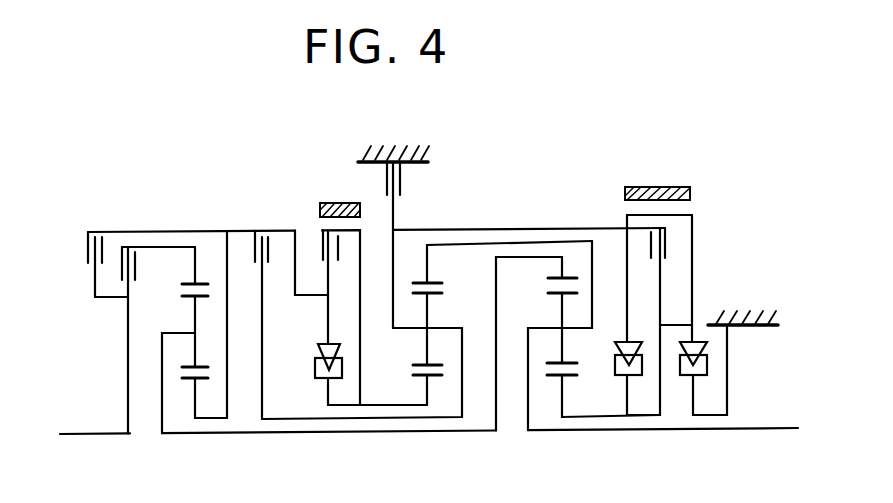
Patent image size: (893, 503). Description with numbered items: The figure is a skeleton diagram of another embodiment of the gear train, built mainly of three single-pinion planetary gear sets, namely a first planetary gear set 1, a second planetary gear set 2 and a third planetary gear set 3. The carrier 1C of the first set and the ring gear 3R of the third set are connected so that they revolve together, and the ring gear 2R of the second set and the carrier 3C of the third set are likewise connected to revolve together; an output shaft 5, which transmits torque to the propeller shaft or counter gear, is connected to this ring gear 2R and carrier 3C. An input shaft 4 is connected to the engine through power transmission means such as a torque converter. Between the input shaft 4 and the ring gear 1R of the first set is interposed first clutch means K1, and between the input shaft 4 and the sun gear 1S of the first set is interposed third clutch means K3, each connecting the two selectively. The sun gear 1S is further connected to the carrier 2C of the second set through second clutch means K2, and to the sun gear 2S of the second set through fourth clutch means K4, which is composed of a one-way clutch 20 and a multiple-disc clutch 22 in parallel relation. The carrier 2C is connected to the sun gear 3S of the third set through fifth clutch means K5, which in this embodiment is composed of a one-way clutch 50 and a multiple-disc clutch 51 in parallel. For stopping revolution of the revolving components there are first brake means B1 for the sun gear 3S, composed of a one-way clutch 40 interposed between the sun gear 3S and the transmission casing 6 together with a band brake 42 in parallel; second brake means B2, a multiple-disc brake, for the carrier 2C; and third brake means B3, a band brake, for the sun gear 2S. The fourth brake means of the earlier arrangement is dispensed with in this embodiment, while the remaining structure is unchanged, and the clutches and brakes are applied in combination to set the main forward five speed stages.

The third clutch means K3 is at (107, 252).
The first clutch means K1 is at (158, 266).
The second clutch means K2 is at (264, 313).
The fourth clutch means K4 is at (338, 257).
The fifth clutch means K5 is at (643, 249).
The first brake means B1 is at (678, 244).
The second brake means B2 is at (403, 222).
The third brake means B3 is at (340, 198).
The first planetary gear set 1 is at (191, 355).
The ring gear of the first planetary gear set 1R is at (205, 271).
The carrier of the first planetary gear set 1C is at (175, 364).
The sun gear of the first planetary gear set 1S is at (204, 324).
The second planetary gear set 2 is at (427, 359).
The ring gear of the second planetary gear set 2R is at (502, 267).
The carrier of the second planetary gear set 2C is at (364, 356).
The sun gear of the second planetary gear set 2S is at (393, 389).
The third planetary gear set 3 is at (578, 357).
The ring gear of the third planetary gear set 3R is at (536, 344).
The carrier of the third planetary gear set 3C is at (557, 335).
The sun gear of the third planetary gear set 3S is at (603, 390).
The input shaft 4 is at (101, 433).
The output shaft 5 is at (752, 427).
The transmission casing 6 is at (422, 153).
The one-way clutch 20 is at (327, 362).
The multiple-disc clutch 22 is at (322, 243).
The one-way clutch 40 is at (701, 340).
The band brake 42 is at (672, 186).
The one-way clutch 50 is at (620, 378).
The multiple-disc clutch 51 is at (652, 238).